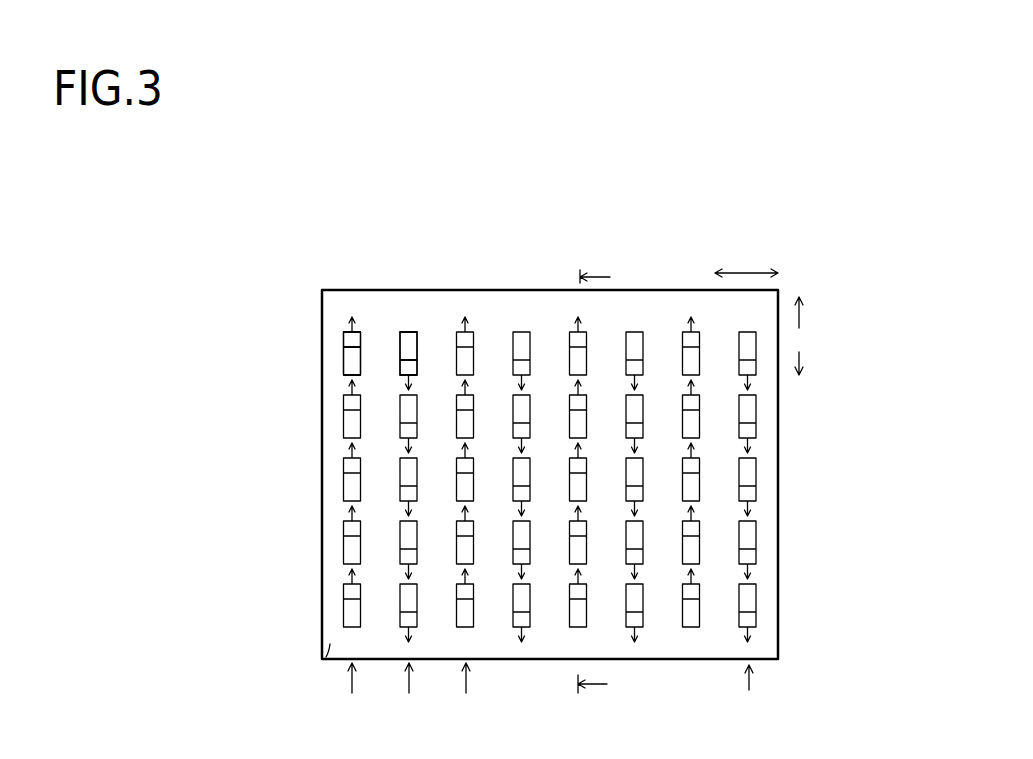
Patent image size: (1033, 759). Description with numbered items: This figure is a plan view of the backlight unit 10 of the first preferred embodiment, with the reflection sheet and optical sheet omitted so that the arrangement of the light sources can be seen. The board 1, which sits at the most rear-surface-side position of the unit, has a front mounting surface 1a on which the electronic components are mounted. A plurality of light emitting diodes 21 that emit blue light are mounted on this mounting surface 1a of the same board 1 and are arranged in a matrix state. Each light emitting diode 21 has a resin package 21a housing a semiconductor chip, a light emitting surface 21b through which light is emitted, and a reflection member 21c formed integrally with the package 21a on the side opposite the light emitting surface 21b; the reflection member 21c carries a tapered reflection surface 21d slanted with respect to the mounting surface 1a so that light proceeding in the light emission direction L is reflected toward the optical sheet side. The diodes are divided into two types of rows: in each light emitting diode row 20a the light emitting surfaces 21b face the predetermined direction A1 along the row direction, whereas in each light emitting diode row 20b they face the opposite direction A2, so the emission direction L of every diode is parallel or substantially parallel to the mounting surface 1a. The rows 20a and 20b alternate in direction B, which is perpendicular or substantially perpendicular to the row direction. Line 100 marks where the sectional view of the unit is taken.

The backlight unit 10 is at (321, 272).
The board 1 is at (320, 632).
The mounting surface 1a is at (322, 659).
The light emitting diode 21 is at (343, 335).
The package 21a is at (343, 340).
The light emitting surface 21b is at (347, 332).
The reflection member 21c is at (343, 356).
The reflection surface 21d is at (344, 368).
The light emitting diode row 20a is at (418, 692).
The light emitting diode row 20b is at (589, 692).
The line 100- 100 is at (605, 483).
The light emission direction L is at (373, 345).
The direction B is at (746, 258).
The direction A1 is at (816, 315).
The direction A2 is at (816, 359).